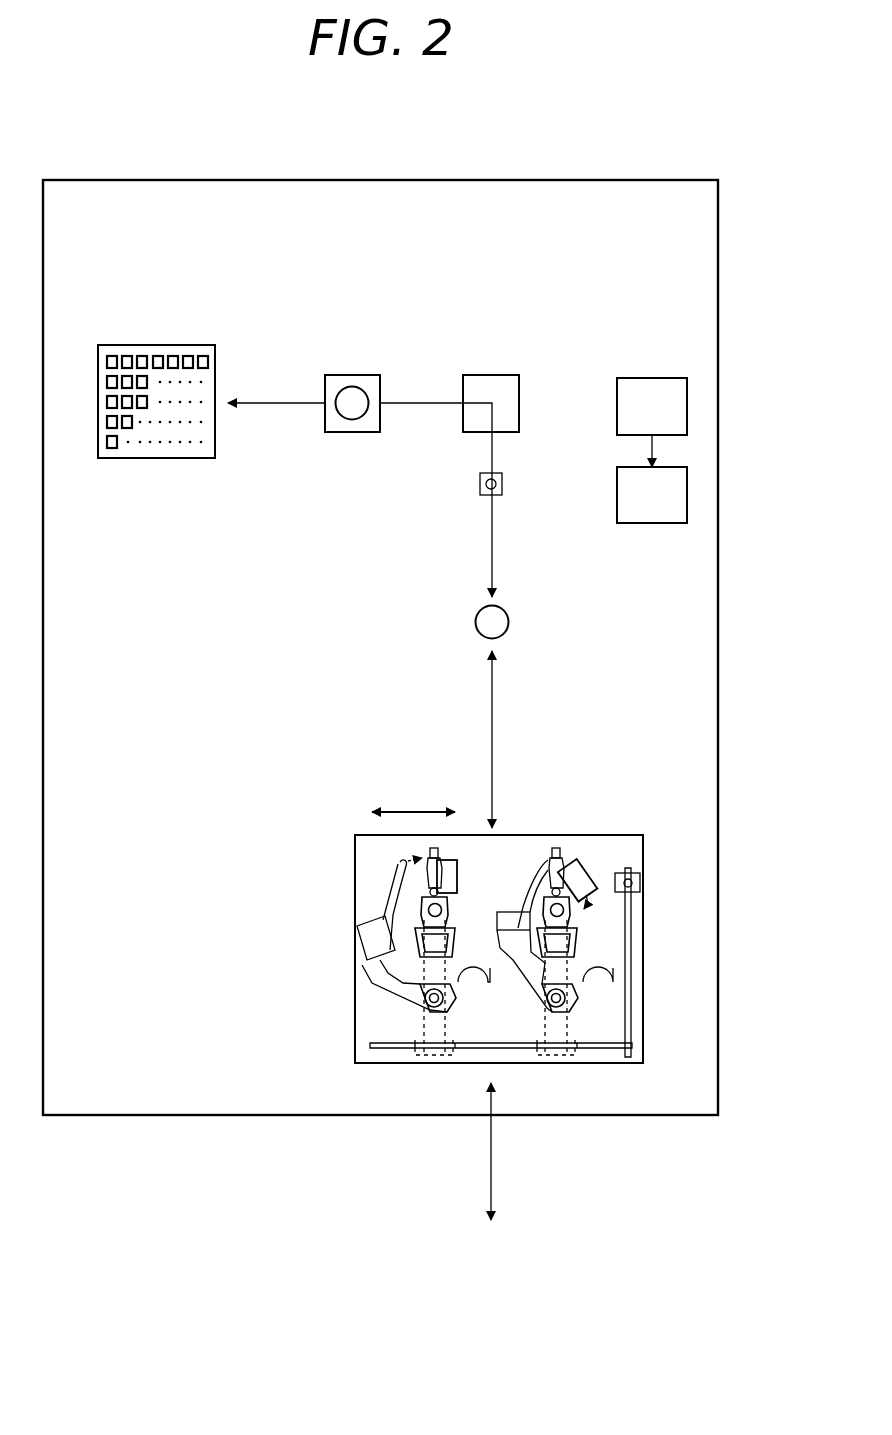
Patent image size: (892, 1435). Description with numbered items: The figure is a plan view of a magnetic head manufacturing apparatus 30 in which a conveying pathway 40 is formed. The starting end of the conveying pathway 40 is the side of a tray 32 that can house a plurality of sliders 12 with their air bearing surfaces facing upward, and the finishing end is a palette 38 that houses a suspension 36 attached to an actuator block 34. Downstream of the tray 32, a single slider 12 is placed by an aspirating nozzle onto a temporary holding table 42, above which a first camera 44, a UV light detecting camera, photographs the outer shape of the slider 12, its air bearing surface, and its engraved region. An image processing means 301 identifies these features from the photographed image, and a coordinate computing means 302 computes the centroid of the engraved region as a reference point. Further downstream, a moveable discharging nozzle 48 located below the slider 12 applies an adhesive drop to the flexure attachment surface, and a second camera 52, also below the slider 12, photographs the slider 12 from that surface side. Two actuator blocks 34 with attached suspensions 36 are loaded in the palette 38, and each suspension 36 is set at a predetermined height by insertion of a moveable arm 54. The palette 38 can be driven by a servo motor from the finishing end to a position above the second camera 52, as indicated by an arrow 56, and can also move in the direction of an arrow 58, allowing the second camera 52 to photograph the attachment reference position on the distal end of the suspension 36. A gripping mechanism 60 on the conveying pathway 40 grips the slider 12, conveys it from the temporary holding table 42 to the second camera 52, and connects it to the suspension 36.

The magnetic head manufacturing apparatus 30 is at (624, 157).
The slider 12 is at (113, 356).
The tray 32 is at (162, 345).
The temporary holding table 42 is at (372, 378).
The first camera 44 is at (348, 388).
The gripping mechanism 60 is at (505, 362).
The discharging nozzle 48 is at (503, 484).
The conveying pathway 40 is at (492, 541).
The second camera 52 is at (506, 621).
The arrow 56 is at (492, 745).
The arrow 58 is at (403, 812).
The image processing means 301 is at (668, 378).
The coordinate computing means 302 is at (672, 525).
The palette 38 is at (367, 866).
The actuator block 34 is at (440, 925).
The suspension 36 is at (437, 877).
The moveable arm 54 is at (373, 962).